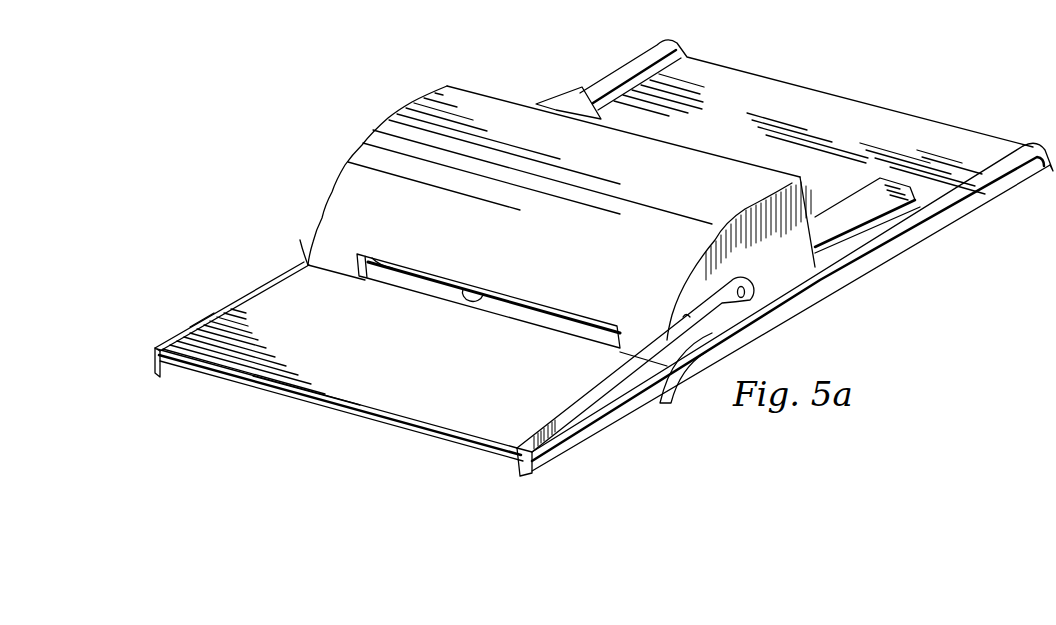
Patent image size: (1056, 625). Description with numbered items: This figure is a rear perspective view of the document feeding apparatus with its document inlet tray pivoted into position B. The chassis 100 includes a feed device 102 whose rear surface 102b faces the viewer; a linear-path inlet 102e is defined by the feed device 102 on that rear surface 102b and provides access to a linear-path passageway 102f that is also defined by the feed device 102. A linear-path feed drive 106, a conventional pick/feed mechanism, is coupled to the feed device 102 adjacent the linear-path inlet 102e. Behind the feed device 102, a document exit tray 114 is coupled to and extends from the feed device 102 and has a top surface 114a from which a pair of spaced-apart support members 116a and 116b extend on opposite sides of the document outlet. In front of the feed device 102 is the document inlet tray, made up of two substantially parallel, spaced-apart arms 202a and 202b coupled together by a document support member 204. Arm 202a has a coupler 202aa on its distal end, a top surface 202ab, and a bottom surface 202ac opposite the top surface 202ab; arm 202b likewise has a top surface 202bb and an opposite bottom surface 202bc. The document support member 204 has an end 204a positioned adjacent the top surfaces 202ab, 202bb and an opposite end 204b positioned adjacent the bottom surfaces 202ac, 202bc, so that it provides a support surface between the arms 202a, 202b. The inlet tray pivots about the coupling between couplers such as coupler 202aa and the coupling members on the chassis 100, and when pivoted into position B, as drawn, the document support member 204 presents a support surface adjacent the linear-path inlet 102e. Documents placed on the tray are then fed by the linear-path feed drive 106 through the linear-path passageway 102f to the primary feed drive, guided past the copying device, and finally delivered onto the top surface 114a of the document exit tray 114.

The chassis 100 is at (300, 142).
The feed device 102 is at (448, 93).
The rear surface 102b is at (300, 255).
The linear-path inlet 102e is at (392, 268).
The linear-path passageway 102f is at (508, 320).
The linear-path feed drive 106 is at (467, 287).
The document exit tray 114 is at (856, 102).
The top surface 114a is at (777, 97).
The support member 116a is at (852, 207).
The support member 116b is at (556, 94).
The arm 202a is at (593, 406).
The coupler 202aa is at (755, 298).
The top surface 202ab is at (560, 413).
The bottom surface 202ac is at (570, 440).
The arm 202b is at (267, 278).
The top surface 202bb is at (213, 304).
The bottom surface 202bc is at (170, 372).
The document support member 204 is at (412, 379).
The end 204a is at (553, 327).
The end 204b is at (413, 427).
The position B is at (296, 425).